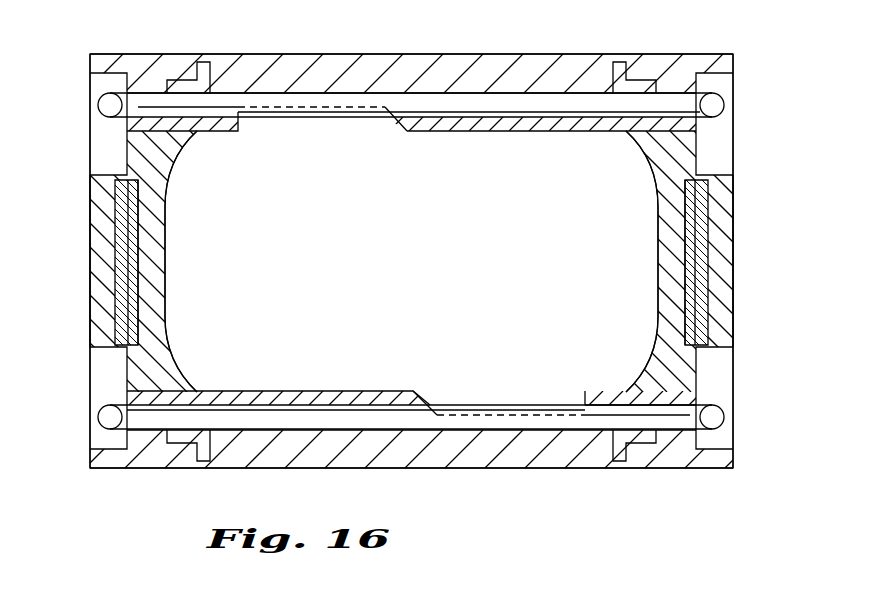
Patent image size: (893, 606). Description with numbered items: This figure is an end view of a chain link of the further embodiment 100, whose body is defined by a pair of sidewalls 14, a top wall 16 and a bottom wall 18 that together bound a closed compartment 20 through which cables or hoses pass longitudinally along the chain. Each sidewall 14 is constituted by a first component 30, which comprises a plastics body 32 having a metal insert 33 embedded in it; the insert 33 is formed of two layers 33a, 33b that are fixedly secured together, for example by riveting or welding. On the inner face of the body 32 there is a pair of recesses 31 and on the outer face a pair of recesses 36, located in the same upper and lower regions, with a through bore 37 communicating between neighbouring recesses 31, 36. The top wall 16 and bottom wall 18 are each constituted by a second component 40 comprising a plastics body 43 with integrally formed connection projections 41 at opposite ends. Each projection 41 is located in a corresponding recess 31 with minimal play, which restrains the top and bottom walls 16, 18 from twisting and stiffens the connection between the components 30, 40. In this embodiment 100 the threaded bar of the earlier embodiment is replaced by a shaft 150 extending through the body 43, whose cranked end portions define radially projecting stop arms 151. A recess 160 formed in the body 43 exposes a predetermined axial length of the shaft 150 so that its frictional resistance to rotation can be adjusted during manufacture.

The sidewall 14 is at (84, 265).
The top wall 16 is at (356, 50).
The bottom wall 18 is at (407, 476).
The compartment 20 is at (488, 233).
The first component 30 is at (95, 192).
The recess 31 is at (197, 85).
The plastics body 32 is at (103, 302).
The metal insert 33 is at (706, 238).
The layer 33a is at (115, 230).
The layer 33b is at (132, 230).
The recess 36 is at (92, 80).
The through bore 37 is at (172, 135).
The second component 40 is at (445, 58).
The connection projection 41 is at (648, 92).
The plastics body 43 is at (284, 75).
The further embodiment 100 is at (490, 478).
The shaft 150 is at (443, 100).
The stop arm 151 is at (103, 107).
The recess 160 is at (348, 126).